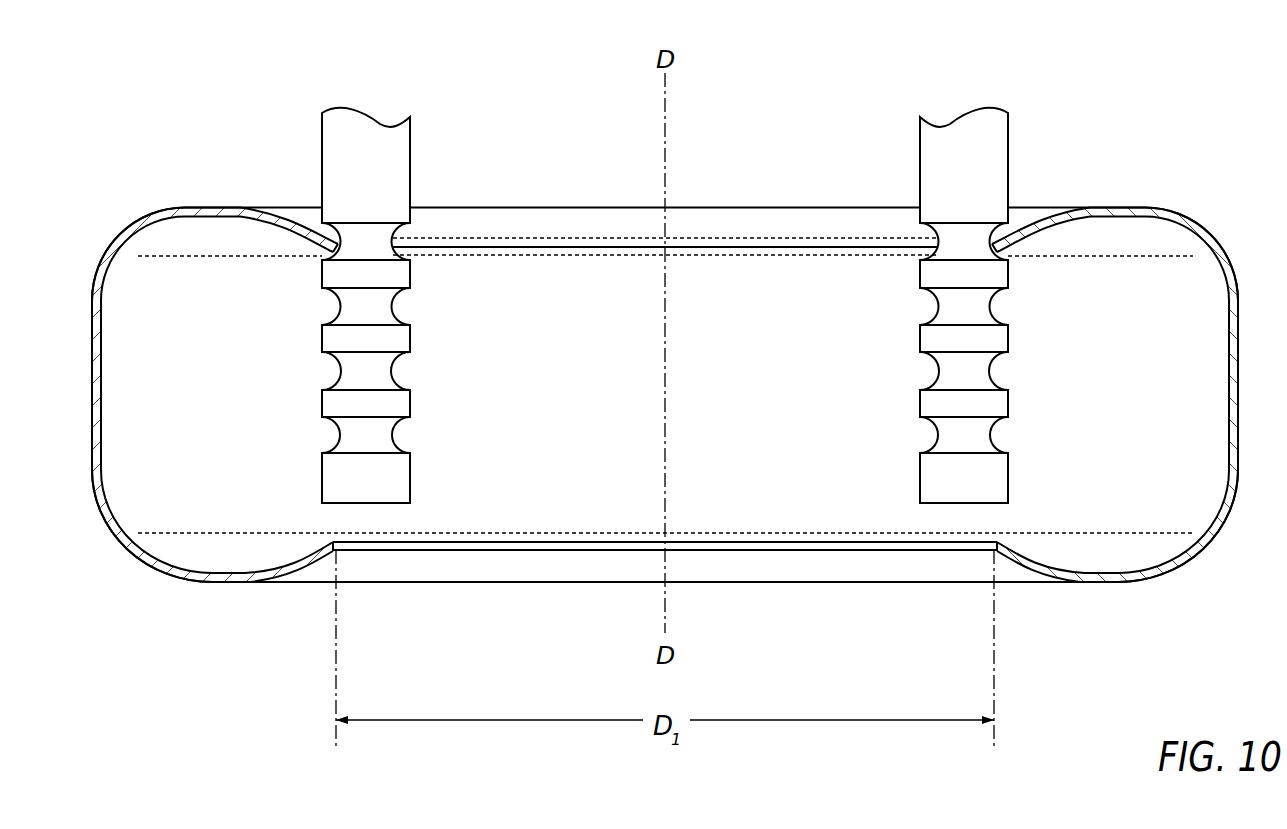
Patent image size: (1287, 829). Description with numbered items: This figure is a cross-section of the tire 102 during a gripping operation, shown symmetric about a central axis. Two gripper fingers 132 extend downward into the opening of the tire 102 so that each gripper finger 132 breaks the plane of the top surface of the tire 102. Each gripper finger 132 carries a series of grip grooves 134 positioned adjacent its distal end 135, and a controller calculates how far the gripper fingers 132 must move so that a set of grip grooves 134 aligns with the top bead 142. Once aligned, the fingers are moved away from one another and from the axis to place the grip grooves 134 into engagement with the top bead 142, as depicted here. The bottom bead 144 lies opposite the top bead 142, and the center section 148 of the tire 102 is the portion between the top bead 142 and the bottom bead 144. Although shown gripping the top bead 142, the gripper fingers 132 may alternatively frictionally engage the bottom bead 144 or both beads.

The tire 102 is at (723, 565).
The gripper finger 132 is at (400, 148).
The grip groove 134 is at (395, 240).
The distal end 135 is at (387, 503).
The top bead 142 is at (525, 247).
The bottom bead 144 is at (364, 531).
The center section 148 is at (224, 404).